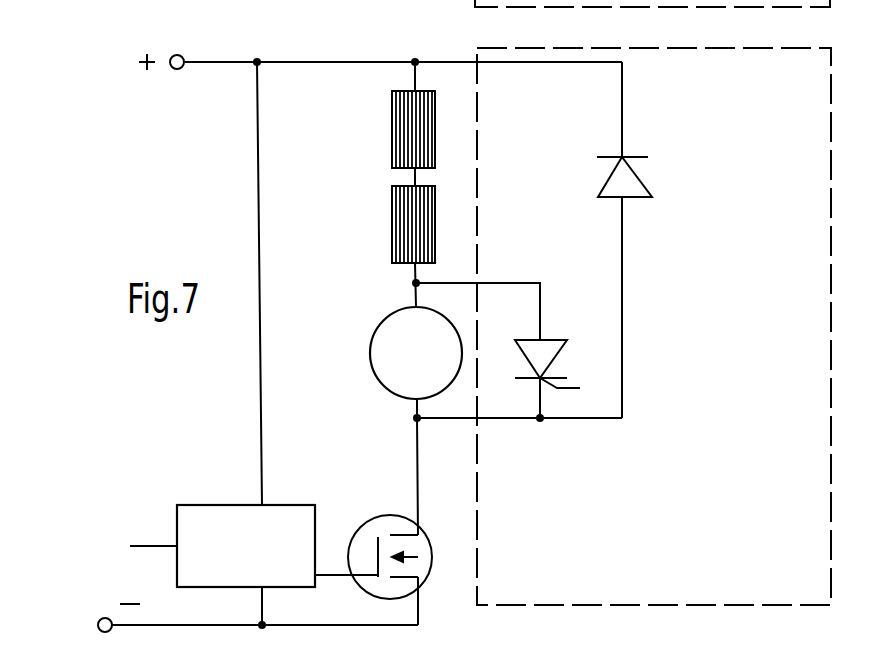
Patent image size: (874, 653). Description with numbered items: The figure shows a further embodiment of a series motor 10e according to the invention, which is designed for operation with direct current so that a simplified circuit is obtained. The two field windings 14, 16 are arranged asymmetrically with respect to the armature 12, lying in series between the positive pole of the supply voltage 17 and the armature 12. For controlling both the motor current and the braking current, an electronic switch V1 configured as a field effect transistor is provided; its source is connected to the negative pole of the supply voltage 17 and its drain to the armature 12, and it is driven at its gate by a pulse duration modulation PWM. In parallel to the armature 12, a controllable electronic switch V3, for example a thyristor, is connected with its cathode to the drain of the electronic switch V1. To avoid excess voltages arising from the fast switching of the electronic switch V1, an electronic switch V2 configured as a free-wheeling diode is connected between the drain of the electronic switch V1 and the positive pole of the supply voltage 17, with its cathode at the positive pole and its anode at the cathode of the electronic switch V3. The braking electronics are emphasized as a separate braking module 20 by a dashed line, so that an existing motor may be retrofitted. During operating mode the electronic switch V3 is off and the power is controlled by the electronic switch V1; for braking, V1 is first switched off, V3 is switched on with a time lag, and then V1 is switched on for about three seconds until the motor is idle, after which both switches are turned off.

The series motor 10e is at (142, 144).
The supply voltage 17 is at (178, 72).
The field winding 14 is at (410, 123).
The field winding 16 is at (410, 215).
The armature 12 is at (398, 355).
The electronic switch V1 is at (368, 535).
The electronic switch V2 is at (628, 181).
The electronic switch V3 is at (545, 348).
The pulse duration modulation PWM is at (193, 530).
The braking module 20 is at (795, 104).